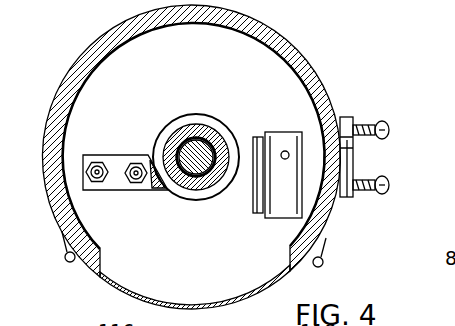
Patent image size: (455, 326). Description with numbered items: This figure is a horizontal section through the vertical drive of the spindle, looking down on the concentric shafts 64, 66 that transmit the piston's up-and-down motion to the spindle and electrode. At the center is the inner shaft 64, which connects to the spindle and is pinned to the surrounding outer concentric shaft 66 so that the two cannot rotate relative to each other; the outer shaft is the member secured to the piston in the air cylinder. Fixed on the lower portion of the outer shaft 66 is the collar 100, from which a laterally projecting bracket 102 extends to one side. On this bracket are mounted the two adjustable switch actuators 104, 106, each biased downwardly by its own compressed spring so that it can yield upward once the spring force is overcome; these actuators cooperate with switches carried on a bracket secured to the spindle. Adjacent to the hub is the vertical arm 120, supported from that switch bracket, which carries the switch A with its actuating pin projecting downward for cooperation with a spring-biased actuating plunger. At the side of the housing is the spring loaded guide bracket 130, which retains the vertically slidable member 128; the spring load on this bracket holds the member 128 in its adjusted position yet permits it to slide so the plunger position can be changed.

The inner shaft 64 is at (196, 133).
The outer concentric shaft 66 is at (177, 138).
The collar 100 is at (204, 200).
The bracket 102 is at (83, 165).
The switch actuator 104 is at (97, 164).
The switch actuator 106 is at (136, 183).
The vertical arm 120 is at (255, 136).
The switch A is at (287, 133).
The vertically slidable member 128 is at (355, 147).
The spring loaded guide bracket 130 is at (344, 118).